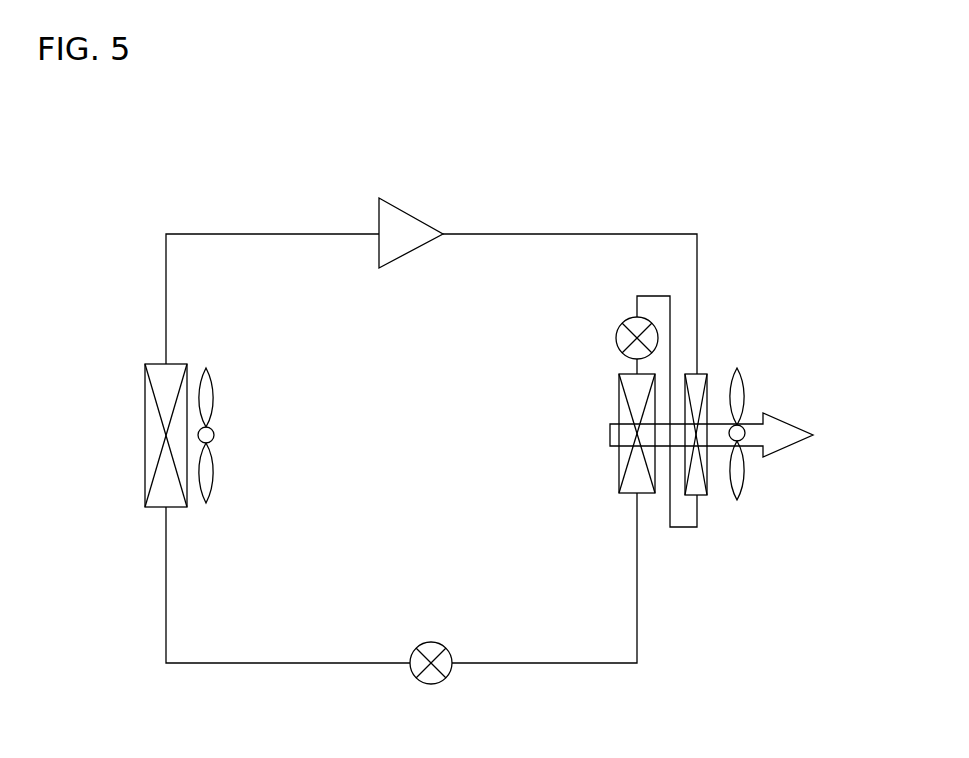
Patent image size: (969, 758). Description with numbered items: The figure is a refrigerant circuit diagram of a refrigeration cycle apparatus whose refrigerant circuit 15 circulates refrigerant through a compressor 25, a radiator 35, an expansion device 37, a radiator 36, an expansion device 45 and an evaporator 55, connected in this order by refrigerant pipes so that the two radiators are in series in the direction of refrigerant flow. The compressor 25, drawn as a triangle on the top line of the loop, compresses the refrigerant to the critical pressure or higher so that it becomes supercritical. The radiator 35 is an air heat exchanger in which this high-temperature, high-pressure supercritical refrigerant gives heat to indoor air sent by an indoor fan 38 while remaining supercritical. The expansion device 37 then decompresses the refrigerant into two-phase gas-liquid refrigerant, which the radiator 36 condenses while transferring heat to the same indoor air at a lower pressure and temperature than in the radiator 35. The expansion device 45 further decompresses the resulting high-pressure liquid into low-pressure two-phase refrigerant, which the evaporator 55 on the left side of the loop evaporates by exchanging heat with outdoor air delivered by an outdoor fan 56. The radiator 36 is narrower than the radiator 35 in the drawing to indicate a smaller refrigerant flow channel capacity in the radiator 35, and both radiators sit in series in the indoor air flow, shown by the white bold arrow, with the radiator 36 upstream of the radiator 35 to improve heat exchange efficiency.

The refrigerant circuit 15 is at (548, 234).
The compressor 25 is at (405, 205).
The radiator 35 is at (700, 372).
The radiator 36 is at (617, 392).
The expansion device 37 is at (616, 332).
The indoor fan 38 is at (747, 480).
The expansion device 45 is at (431, 642).
The evaporator 55 is at (143, 437).
The outdoor fan 56 is at (213, 473).